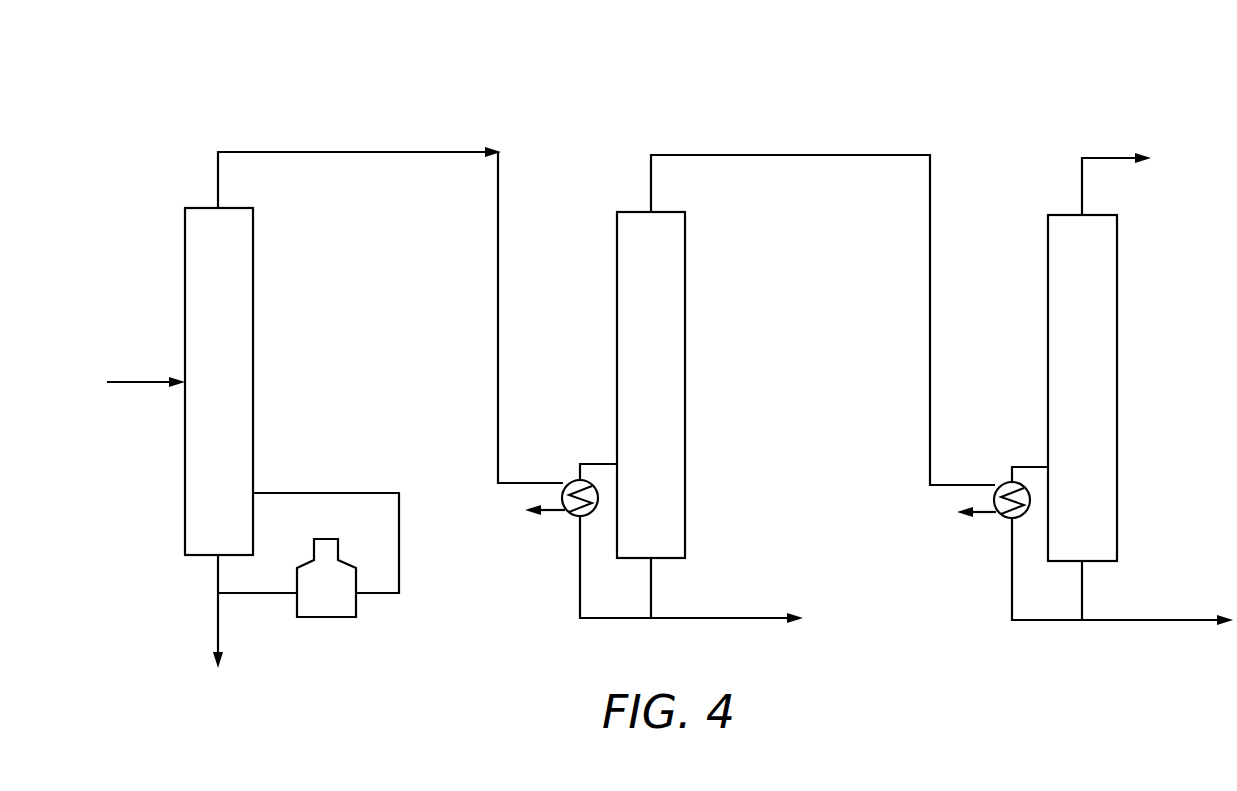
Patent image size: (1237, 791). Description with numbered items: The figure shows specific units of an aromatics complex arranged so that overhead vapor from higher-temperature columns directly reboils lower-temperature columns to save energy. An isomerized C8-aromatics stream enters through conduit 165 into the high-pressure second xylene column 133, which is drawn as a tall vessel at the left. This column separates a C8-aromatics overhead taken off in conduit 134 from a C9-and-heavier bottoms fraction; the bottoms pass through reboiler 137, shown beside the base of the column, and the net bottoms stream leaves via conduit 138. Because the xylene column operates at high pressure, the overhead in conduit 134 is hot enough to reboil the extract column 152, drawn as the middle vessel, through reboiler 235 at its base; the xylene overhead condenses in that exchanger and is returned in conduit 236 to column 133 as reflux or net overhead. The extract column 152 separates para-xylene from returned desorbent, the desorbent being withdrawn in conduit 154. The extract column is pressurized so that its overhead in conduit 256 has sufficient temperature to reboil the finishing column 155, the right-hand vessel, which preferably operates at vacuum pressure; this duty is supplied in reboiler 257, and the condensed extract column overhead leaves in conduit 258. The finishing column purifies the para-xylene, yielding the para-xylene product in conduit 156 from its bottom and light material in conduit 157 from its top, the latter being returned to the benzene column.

The high-pressure second xylene column 133 is at (254, 382).
The conduit 134 is at (358, 151).
The reboiler 137 is at (326, 539).
The conduit 138 is at (217, 613).
The extract column 152 is at (686, 383).
The conduit 154 is at (736, 617).
The finishing column 155 is at (1118, 387).
The conduit 156 is at (1164, 618).
The conduit 157 is at (1103, 157).
The conduit 165 is at (133, 380).
The reboiler 235 is at (576, 481).
The conduit 236 is at (548, 517).
The conduit 256 is at (790, 154).
The reboiler 257 is at (1008, 482).
The conduit 258 is at (978, 520).